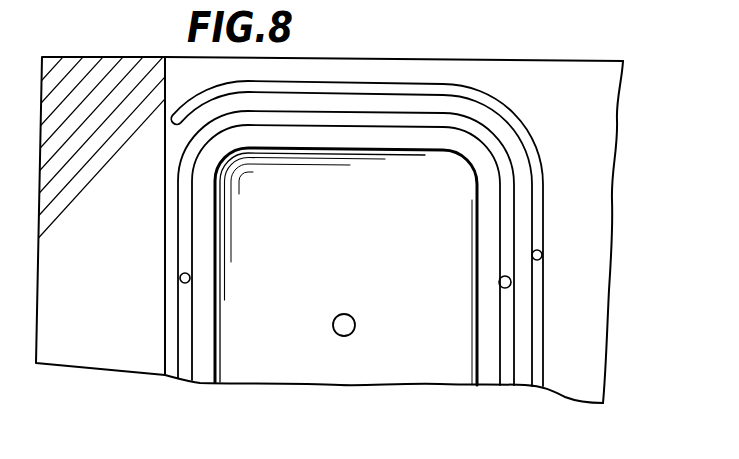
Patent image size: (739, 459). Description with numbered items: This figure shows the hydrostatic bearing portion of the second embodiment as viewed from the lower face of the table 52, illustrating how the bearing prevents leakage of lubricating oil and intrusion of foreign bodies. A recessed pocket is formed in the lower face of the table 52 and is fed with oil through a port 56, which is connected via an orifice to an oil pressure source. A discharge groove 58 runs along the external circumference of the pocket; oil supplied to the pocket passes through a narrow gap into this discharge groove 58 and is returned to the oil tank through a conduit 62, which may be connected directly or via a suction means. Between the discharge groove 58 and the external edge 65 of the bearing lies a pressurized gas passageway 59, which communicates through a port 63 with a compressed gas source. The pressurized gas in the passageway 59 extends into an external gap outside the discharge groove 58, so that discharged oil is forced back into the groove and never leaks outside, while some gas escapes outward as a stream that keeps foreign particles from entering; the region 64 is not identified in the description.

The table 52 is at (552, 85).
The port 56 is at (340, 312).
The discharge groove 58 is at (348, 117).
The pressurized gas passageway 59 is at (402, 85).
The conduit 62 is at (190, 278).
The port 63 is at (543, 253).
The pane / insert 64 is at (259, 353).
The external edge 65 is at (318, 60).